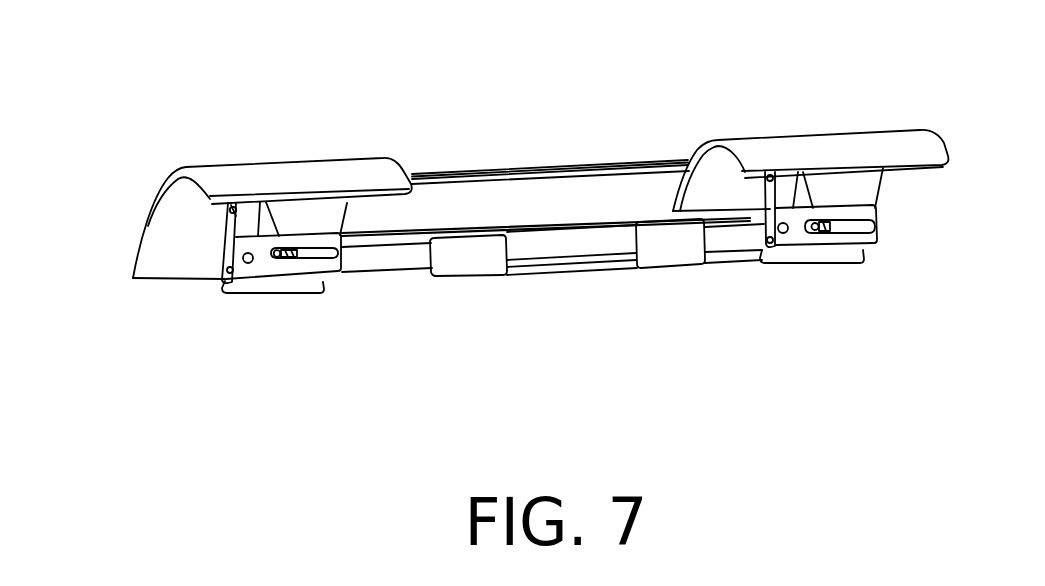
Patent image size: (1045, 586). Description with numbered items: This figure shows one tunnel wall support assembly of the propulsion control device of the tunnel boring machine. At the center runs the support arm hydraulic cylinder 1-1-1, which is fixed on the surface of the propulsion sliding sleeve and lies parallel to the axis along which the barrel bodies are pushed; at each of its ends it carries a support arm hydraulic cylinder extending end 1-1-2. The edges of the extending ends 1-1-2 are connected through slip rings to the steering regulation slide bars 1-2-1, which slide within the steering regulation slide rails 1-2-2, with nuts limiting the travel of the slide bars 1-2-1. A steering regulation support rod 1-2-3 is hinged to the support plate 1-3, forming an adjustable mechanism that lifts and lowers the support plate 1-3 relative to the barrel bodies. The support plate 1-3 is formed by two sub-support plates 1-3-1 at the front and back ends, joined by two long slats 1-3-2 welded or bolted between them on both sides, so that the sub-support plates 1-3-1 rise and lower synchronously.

The support plate 1-3 is at (540, 145).
The sub-support plate 1-3-1 is at (277, 173).
The long slat 1-3-2 is at (623, 168).
The steering regulation slide bar 1-2-1 is at (188, 275).
The steering regulation slide rail 1-2-2 is at (837, 228).
The steering regulation support rod 1-2-3 is at (236, 218).
The support arm hydraulic cylinder 1-1-1 is at (581, 248).
The support arm hydraulic cylinder extending end 1-1-2 is at (740, 238).